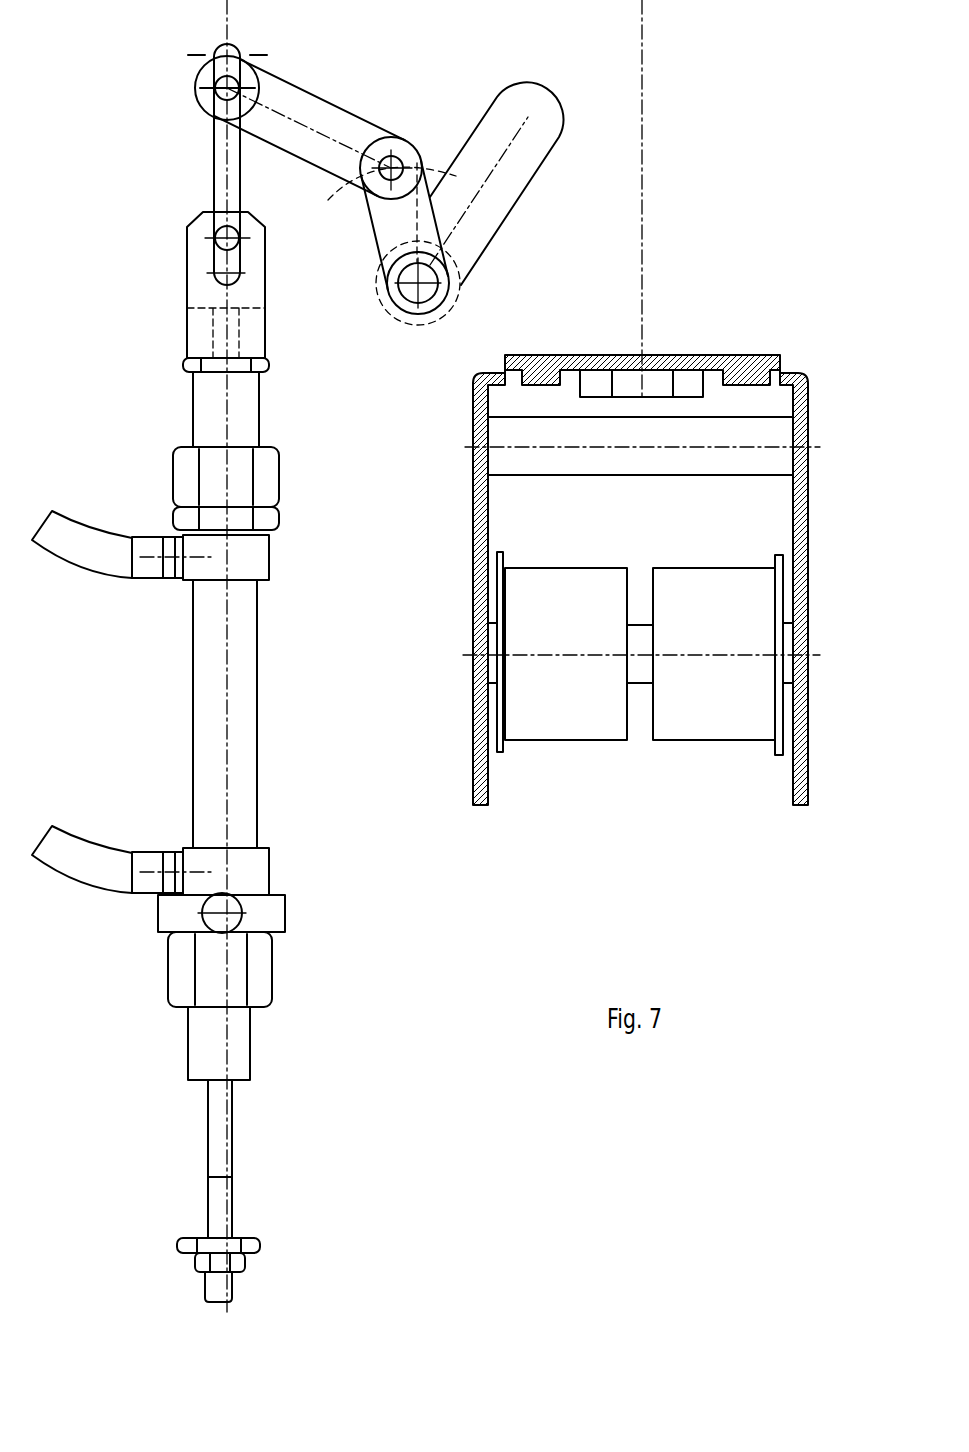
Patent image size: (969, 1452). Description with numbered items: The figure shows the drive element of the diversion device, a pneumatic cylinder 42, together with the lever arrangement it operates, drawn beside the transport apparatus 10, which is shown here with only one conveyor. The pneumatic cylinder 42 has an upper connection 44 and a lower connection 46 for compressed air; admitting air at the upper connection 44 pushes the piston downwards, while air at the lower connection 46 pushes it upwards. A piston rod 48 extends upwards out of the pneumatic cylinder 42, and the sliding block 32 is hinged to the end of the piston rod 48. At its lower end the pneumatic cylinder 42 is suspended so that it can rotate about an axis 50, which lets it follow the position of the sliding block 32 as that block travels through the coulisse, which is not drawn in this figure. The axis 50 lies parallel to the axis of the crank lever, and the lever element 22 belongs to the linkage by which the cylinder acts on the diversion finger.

The transport apparatus 10 is at (640, 743).
The cylinder 22 is at (518, 110).
The sliding block 32 is at (198, 93).
The pneumatic cylinder 42 is at (240, 653).
The upper connection 44 is at (158, 540).
The lower connection 46 is at (158, 853).
The piston rod 48 is at (243, 397).
The axis 50 is at (232, 922).